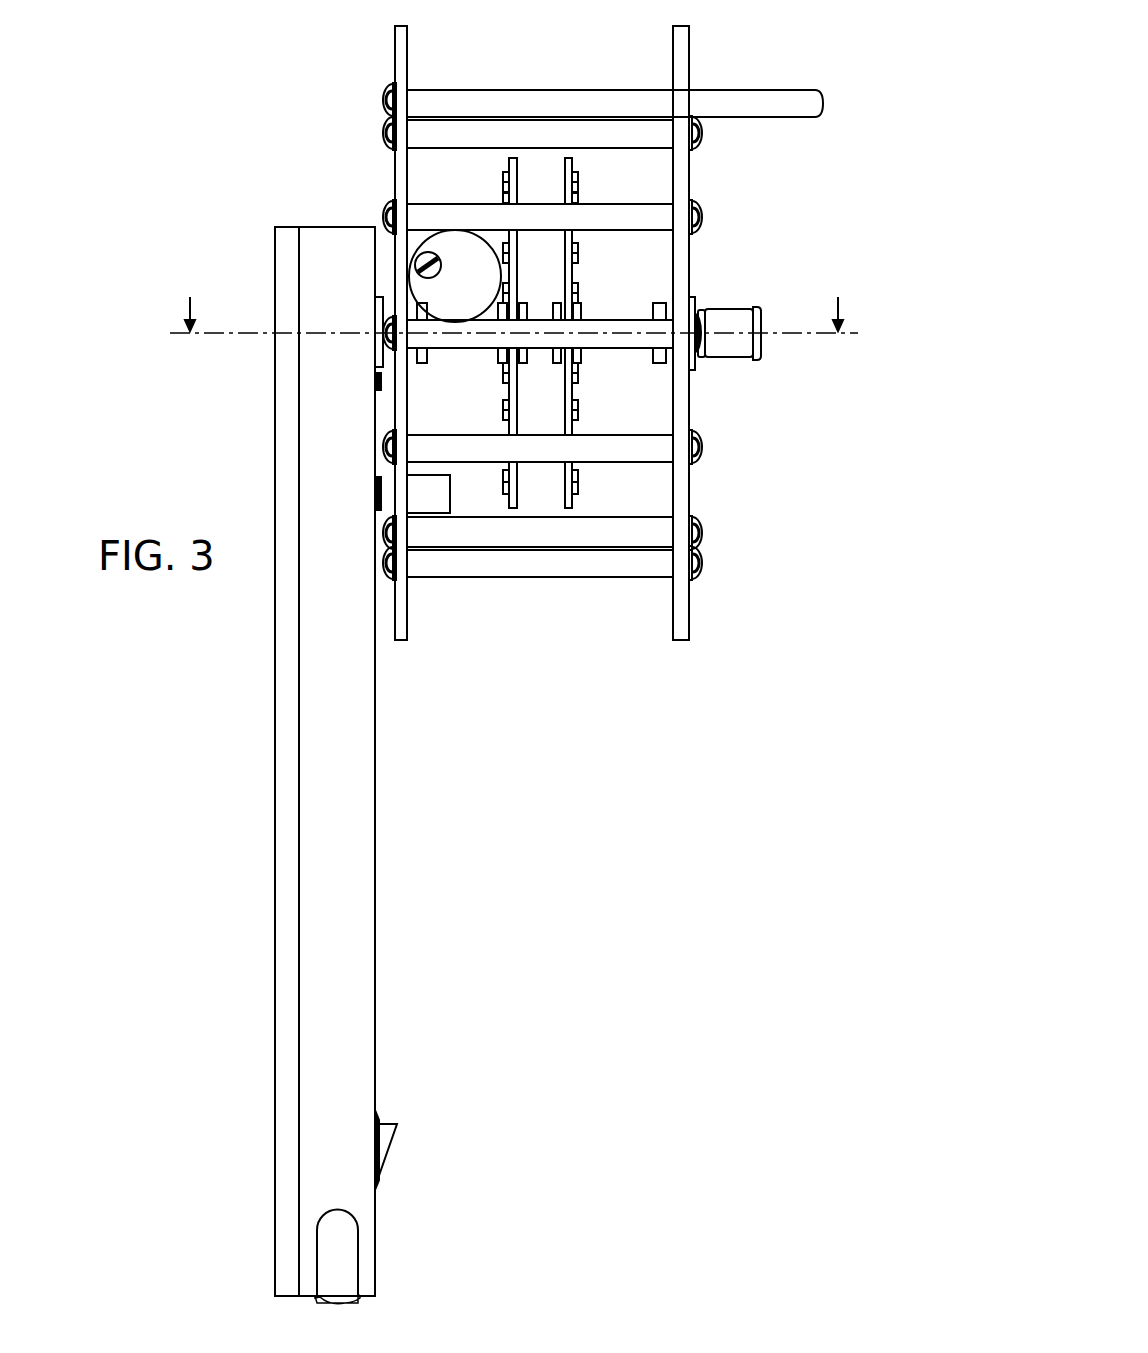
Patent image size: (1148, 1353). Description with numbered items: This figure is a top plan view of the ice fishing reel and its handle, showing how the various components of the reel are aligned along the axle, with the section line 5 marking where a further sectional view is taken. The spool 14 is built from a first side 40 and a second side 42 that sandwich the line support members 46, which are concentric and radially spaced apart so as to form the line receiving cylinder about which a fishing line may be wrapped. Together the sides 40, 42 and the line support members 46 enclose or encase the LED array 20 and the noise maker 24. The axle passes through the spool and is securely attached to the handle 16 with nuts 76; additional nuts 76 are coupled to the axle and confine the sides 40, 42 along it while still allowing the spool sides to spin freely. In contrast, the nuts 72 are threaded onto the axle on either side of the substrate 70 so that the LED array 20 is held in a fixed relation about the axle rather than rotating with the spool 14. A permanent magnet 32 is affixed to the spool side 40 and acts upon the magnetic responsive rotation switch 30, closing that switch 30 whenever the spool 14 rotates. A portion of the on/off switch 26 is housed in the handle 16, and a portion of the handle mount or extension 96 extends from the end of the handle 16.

The section line 5- 5 is at (514, 301).
The spool 14 is at (536, 597).
The handle 16 is at (358, 847).
The LED array 20 is at (574, 191).
The noise maker 24 is at (460, 262).
The on/off switch 26 is at (387, 1140).
The rotation switch 30 is at (375, 487).
The permanent magnet 32 is at (428, 498).
The first side 40 is at (398, 60).
The second side 42 is at (688, 60).
The line support members 46 is at (478, 135).
The substrate 70 is at (568, 273).
The nuts 72 is at (547, 353).
The nuts 76 is at (667, 310).
The handle mount or extension 96 is at (343, 1270).